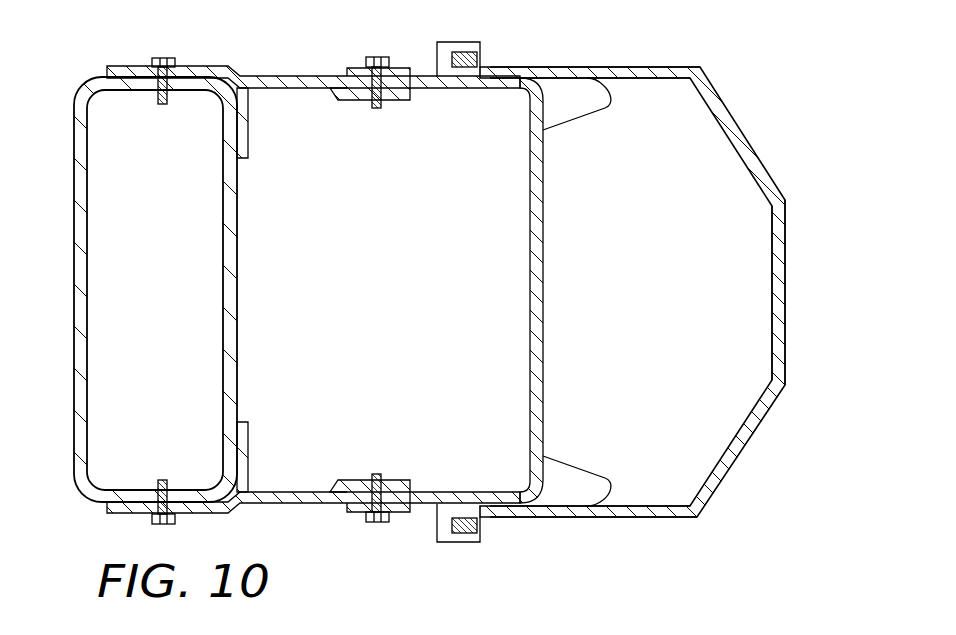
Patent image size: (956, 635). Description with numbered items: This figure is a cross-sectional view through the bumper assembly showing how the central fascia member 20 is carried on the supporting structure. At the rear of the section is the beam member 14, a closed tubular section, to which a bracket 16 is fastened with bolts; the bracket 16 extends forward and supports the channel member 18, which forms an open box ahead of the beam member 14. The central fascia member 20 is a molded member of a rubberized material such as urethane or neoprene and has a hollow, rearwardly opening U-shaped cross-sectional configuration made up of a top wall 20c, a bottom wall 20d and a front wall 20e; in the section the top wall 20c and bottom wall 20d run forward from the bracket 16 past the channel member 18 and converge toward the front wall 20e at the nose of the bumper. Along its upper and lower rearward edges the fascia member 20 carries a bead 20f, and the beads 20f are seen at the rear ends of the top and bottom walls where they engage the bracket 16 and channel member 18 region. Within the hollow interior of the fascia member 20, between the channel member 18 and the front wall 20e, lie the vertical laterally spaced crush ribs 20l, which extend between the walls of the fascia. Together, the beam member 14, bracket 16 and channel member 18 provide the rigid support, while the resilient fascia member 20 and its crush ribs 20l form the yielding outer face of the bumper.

The beam member 14 is at (72, 215).
The bracket 16 is at (295, 74).
The channel member 18 is at (557, 298).
The central fascia member 20 is at (642, 293).
The top wall 20c is at (680, 30).
The bottom wall 20d is at (628, 520).
The front wall 20e is at (788, 266).
The bead 20f is at (463, 58).
The crush ribs 20l is at (643, 219).